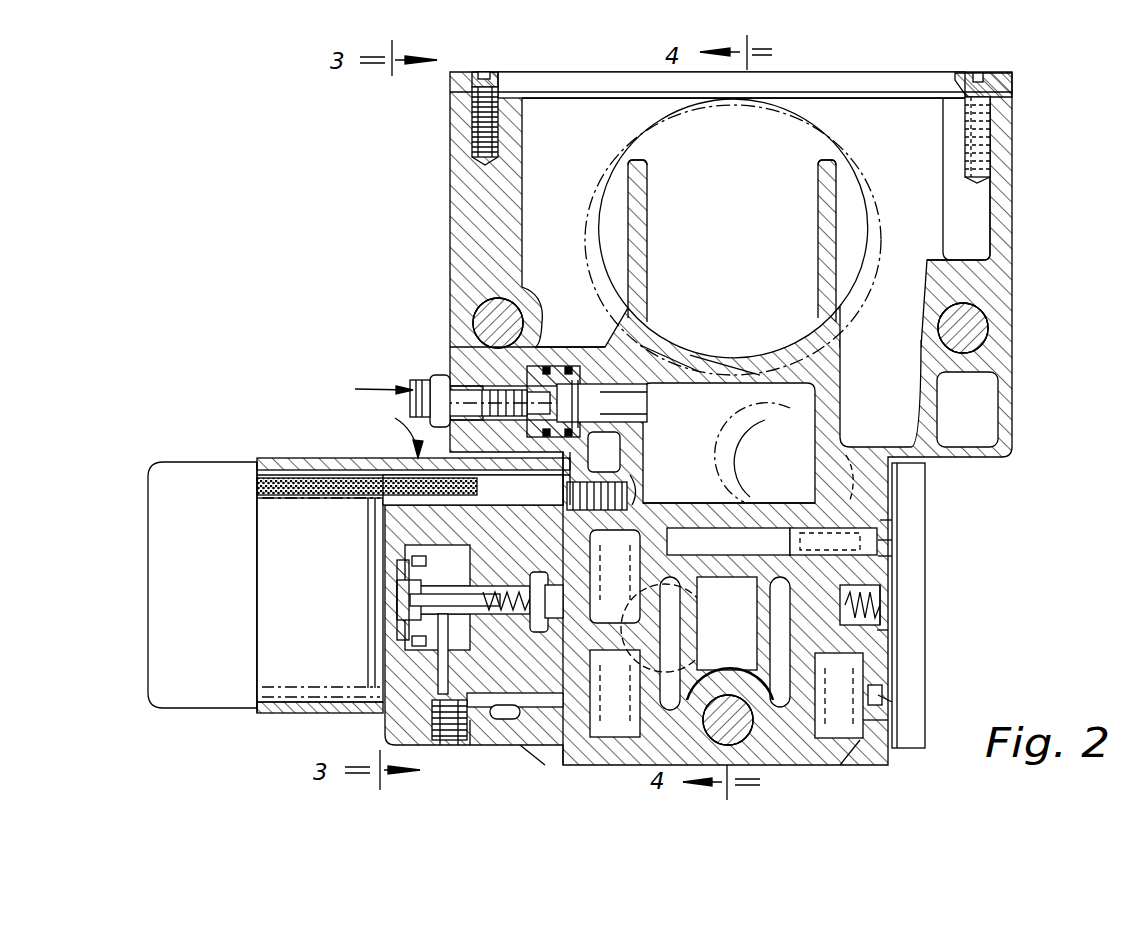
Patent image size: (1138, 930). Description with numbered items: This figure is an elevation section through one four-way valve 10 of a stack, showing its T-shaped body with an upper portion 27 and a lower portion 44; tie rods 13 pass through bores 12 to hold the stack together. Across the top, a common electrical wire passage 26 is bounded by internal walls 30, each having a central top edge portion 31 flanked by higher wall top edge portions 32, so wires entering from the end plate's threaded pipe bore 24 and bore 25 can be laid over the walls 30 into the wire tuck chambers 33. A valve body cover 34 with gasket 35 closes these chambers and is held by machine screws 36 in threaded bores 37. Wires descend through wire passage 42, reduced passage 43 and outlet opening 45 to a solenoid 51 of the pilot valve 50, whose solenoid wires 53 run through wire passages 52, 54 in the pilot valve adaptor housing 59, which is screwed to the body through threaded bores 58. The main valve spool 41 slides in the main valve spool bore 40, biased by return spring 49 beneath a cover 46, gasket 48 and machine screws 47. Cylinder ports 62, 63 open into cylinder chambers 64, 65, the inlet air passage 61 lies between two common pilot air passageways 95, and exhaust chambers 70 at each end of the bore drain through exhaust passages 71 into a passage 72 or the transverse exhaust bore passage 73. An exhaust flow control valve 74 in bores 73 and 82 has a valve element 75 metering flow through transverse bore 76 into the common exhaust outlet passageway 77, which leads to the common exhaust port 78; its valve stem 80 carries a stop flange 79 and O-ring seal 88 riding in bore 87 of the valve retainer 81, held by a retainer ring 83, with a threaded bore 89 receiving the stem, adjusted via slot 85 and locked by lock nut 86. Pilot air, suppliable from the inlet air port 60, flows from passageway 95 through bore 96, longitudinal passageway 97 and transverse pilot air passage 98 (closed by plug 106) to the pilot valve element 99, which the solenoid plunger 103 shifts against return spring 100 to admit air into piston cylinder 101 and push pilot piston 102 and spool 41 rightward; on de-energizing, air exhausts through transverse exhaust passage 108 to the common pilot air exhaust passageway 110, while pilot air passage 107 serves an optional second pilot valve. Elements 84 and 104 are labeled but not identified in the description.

The four-way valve 10 is at (446, 222).
The bores 12 is at (480, 312).
The tie rods 13 is at (523, 330).
The threaded pipe bore 24 is at (840, 110).
The bore 25 is at (860, 180).
The common electrical wire passage 26 is at (754, 224).
The upper portion 27 is at (1000, 252).
The internal integral walls 30 is at (647, 268).
The central top edge portion 31 is at (647, 198).
The wall top edge portions 32 is at (620, 137).
The electrical wire tuck chambers 33 is at (575, 225).
The valve body cover 34 is at (830, 98).
The gasket 35 is at (800, 92).
The machine screws 36 is at (492, 85).
The threaded bores 37 is at (472, 130).
The main valve spool bore 40 is at (892, 640).
The main valve spool 41 is at (728, 543).
The wire passage 42 is at (878, 358).
The reduced size passage 43 is at (870, 460).
The lower portion 44 is at (892, 522).
The outlet opening 45 is at (925, 500).
The cover 46 is at (905, 612).
The machine screws 47 is at (905, 690).
The gasket 48 is at (892, 556).
The return spring 49 is at (881, 600).
The pilot valve 50 is at (398, 427).
The solenoid 51 is at (280, 458).
The wire passage 52 is at (490, 530).
The solenoid wires 53 is at (282, 495).
The wire passage 54 is at (318, 468).
The threaded bores 58 is at (630, 488).
The pilot valve adaptor housing 59 is at (505, 722).
The pressurized air inlet port 60 is at (625, 635).
The inlet air passage 61 is at (660, 690).
The cylinder port 62 is at (690, 742).
The cylinder port 63 is at (860, 745).
The cylinder chamber 64 is at (615, 693).
The cylinder chamber 65 is at (839, 695).
The exhaust chambers 70 is at (780, 544).
The exhaust passage 71 is at (754, 480).
The passage 72 is at (620, 450).
The transverse exhaust bore passage 73 is at (645, 345).
The exhaust flow control valve 74 is at (371, 388).
The valve element 75 is at (640, 410).
The transverse bore 76 is at (640, 398).
The common exhaust outlet passageway 77 is at (746, 430).
The threaded common exhaust port 78 is at (730, 490).
The annular stop flange 79 is at (700, 352).
The valve stem 80 is at (578, 425).
The flow control valve retainer 81 is at (470, 370).
The enlarged diameter transverse bore 82 is at (412, 392).
The retainer ring 83 is at (560, 520).
The web 84 is at (560, 362).
The slot 85 is at (410, 430).
The lock nut 86 is at (437, 385).
The bore 87 is at (565, 403).
The O-ring seal 88 is at (565, 384).
The axial threaded bore 89 is at (485, 392).
The common pilot air passageways 95 is at (892, 720).
The bore 96 is at (570, 703).
The longitudinal passageway 97 is at (472, 745).
The transverse pilot air passage 98 is at (440, 660).
The pilot air valve element 99 is at (397, 625).
The return spring 100 is at (548, 580).
The piston cylinder 101 is at (430, 548).
The pilot piston 102 is at (412, 560).
The solenoid plunger 103 is at (397, 606).
The pocket 104 is at (615, 574).
The plug 106 is at (438, 748).
The pilot air passage 107 is at (905, 705).
The transverse exhaust passage 108 is at (892, 540).
The common pilot air exhaust passageway 110 is at (745, 530).